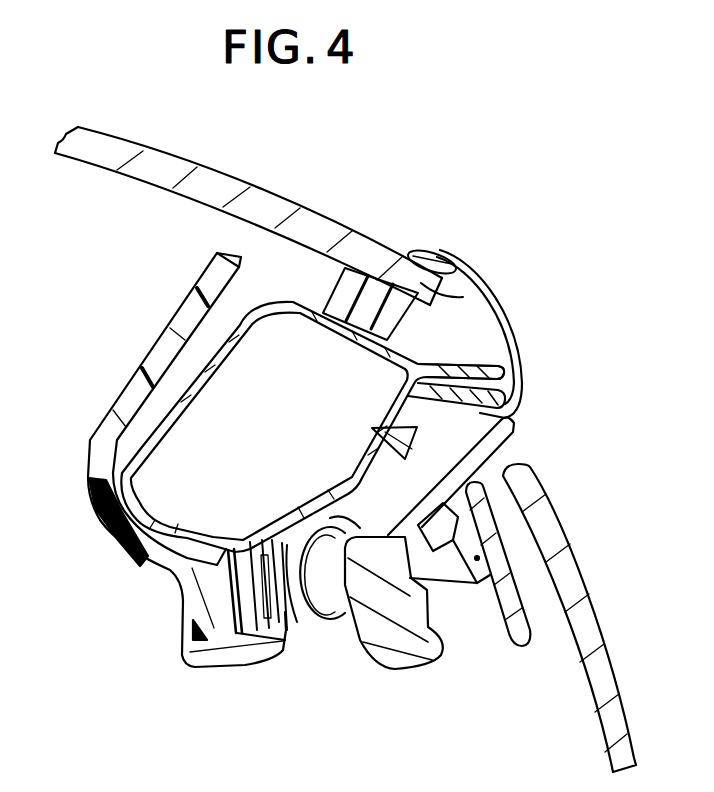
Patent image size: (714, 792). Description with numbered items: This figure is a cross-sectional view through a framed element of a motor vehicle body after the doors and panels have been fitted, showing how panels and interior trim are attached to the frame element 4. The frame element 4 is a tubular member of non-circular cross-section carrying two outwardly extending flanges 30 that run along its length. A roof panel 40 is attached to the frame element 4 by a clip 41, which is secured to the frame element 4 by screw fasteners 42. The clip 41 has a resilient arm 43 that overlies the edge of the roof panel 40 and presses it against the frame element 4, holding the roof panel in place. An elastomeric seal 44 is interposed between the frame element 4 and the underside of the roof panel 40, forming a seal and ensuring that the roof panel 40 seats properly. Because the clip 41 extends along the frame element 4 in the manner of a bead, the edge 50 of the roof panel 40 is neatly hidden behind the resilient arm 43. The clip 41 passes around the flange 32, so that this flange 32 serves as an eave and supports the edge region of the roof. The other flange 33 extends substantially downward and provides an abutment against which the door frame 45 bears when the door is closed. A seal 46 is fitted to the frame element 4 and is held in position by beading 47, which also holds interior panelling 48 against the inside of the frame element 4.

The frame element 4 is at (200, 371).
The flanges 30 is at (479, 391).
The flange 32 is at (503, 362).
The flange 33 is at (233, 588).
The roof panel 40 is at (183, 170).
The clip 41 is at (514, 328).
The screw fasteners 42 is at (420, 447).
The resilient arm 43 is at (440, 253).
The elastomeric seal 44 is at (345, 291).
The door frame 45 is at (423, 650).
The seal 46 is at (327, 620).
The beading 47 is at (223, 665).
The interior panelling 48 is at (103, 511).
The edge 50 is at (463, 298).